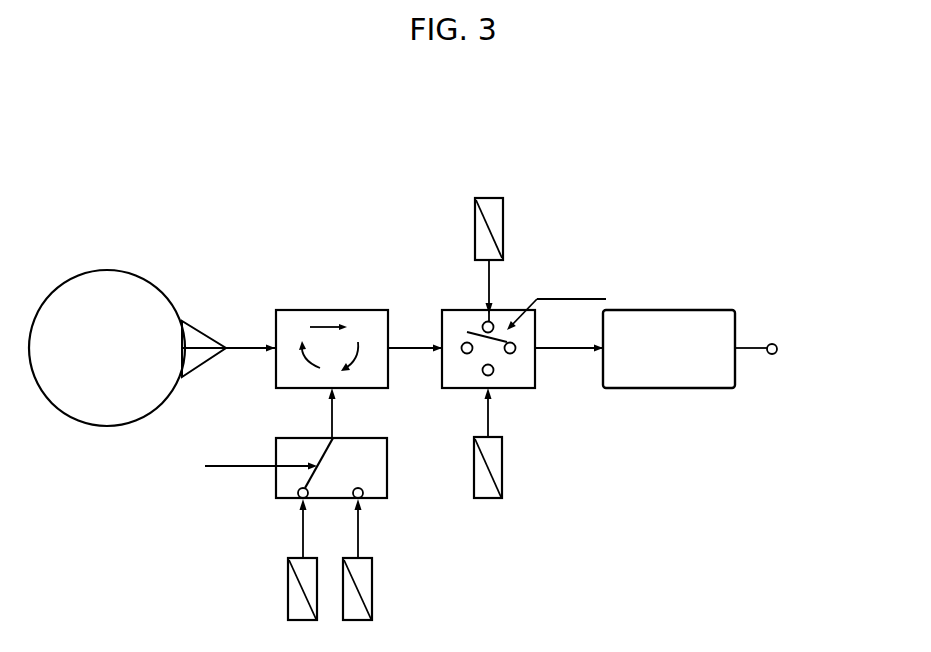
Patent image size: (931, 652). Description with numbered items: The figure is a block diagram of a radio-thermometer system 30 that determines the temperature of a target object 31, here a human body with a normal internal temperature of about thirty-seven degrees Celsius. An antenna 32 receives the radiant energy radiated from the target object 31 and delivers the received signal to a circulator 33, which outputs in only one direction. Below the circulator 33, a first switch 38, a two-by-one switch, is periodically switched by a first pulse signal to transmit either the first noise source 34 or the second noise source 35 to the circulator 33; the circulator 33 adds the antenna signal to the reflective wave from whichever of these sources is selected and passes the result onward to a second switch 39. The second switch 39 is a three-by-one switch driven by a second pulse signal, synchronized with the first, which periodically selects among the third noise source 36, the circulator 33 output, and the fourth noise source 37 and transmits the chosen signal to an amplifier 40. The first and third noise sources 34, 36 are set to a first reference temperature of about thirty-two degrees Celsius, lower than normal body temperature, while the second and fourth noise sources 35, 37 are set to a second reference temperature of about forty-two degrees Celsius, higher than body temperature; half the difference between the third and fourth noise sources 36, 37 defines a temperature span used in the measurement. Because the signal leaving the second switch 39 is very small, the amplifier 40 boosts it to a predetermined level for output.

The radio-thermometer system 30 is at (350, 190).
The target object 31 is at (120, 378).
The antenna 32 is at (205, 332).
The circulator 33 is at (335, 310).
The first noise source 34 is at (286, 589).
The second noise source 35 is at (374, 589).
The third noise source 36 is at (503, 470).
The fourth noise source 37 is at (505, 230).
The first switch 38 is at (352, 438).
The second switch 39 is at (472, 310).
The amplifier 40 is at (667, 310).